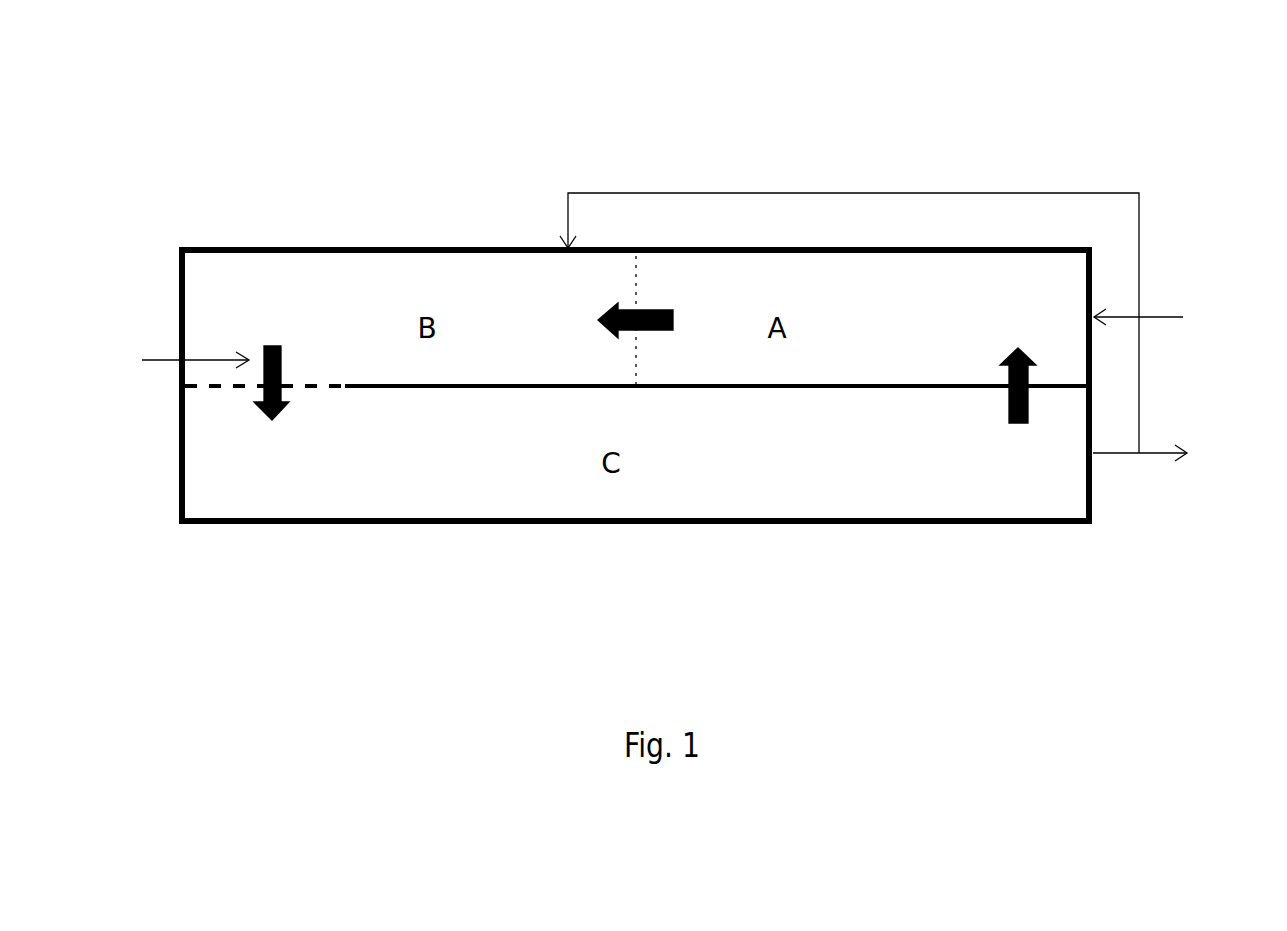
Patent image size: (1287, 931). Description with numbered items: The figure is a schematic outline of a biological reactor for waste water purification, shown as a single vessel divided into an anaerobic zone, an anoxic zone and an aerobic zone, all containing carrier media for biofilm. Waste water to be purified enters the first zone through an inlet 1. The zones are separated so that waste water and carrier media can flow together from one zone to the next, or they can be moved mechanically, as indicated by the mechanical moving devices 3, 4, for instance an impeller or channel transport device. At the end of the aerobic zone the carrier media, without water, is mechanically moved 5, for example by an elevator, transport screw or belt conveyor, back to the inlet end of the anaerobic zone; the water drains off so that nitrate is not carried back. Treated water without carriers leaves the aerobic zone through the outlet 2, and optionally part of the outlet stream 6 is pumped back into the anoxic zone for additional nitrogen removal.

The inlet 1 is at (1168, 327).
The outlet 2 is at (1168, 462).
The mechanical moving device 3 is at (623, 282).
The mechanical moving device 4 is at (166, 364).
The mechanical carrier media transfer 5 is at (1029, 442).
The recycled outlet stream 6 is at (1095, 190).